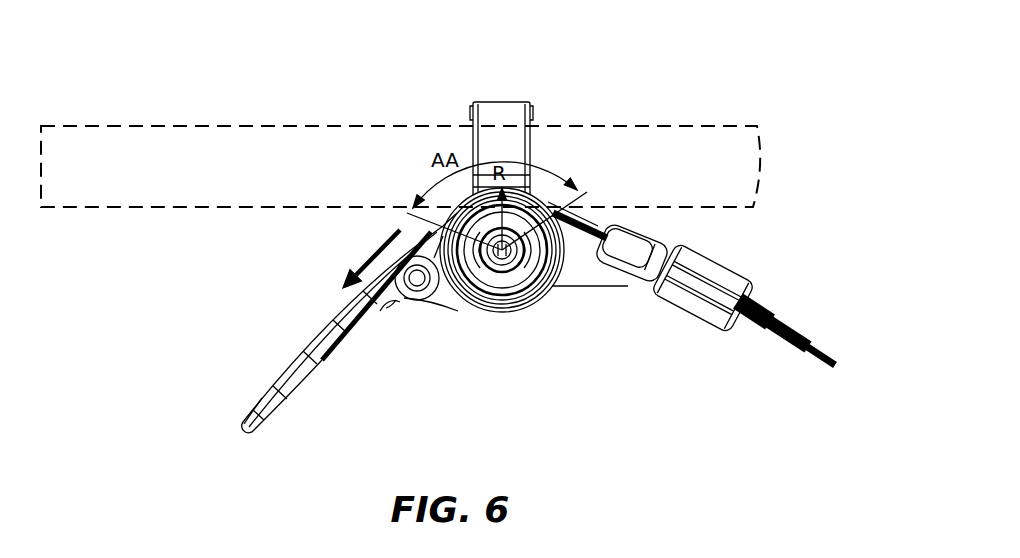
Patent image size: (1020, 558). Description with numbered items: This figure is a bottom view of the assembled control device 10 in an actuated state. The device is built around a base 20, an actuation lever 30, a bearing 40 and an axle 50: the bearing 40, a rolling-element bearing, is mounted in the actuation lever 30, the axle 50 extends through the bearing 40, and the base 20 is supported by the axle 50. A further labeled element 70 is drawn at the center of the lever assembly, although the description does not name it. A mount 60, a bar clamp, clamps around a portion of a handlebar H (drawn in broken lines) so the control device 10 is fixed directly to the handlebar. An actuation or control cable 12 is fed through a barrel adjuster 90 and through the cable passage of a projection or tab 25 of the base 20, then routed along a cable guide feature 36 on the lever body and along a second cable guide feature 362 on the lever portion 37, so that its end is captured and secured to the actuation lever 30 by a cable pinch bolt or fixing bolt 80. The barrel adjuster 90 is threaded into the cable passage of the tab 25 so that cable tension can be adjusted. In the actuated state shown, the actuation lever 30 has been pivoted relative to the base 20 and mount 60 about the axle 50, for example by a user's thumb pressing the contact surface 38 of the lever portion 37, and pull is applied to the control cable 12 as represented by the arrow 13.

The control device 10 is at (655, 73).
The actuation or control cable 12 is at (583, 223).
The arrow 13 is at (377, 248).
The base 20 is at (600, 268).
The projection or tab 25 is at (642, 253).
The actuation lever 30 is at (379, 194).
The cable guide feature 36 is at (436, 252).
The lever portion 37 is at (328, 328).
The contact surface 38 is at (268, 375).
The bearing 40 is at (543, 290).
The axle 50 is at (493, 292).
The mount 60 is at (507, 113).
The pivot axle 70 is at (503, 268).
The cable pinch bolt or fixing bolt 80 is at (410, 292).
The barrel adjuster 90 is at (752, 254).
The cable guide feature 362 is at (387, 310).
The handlebar H is at (155, 214).